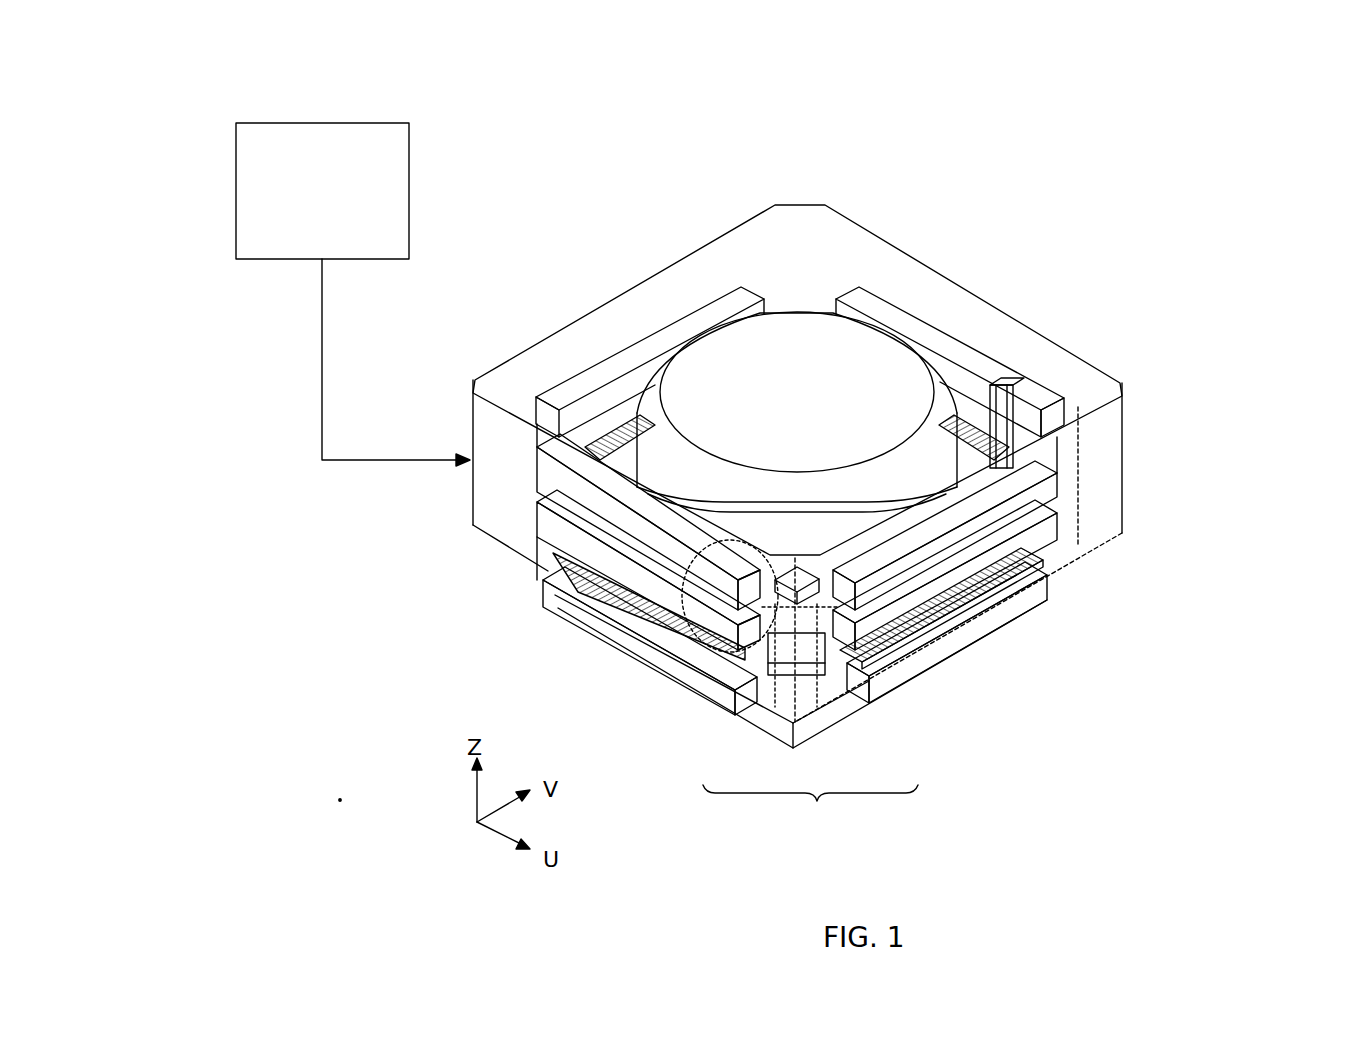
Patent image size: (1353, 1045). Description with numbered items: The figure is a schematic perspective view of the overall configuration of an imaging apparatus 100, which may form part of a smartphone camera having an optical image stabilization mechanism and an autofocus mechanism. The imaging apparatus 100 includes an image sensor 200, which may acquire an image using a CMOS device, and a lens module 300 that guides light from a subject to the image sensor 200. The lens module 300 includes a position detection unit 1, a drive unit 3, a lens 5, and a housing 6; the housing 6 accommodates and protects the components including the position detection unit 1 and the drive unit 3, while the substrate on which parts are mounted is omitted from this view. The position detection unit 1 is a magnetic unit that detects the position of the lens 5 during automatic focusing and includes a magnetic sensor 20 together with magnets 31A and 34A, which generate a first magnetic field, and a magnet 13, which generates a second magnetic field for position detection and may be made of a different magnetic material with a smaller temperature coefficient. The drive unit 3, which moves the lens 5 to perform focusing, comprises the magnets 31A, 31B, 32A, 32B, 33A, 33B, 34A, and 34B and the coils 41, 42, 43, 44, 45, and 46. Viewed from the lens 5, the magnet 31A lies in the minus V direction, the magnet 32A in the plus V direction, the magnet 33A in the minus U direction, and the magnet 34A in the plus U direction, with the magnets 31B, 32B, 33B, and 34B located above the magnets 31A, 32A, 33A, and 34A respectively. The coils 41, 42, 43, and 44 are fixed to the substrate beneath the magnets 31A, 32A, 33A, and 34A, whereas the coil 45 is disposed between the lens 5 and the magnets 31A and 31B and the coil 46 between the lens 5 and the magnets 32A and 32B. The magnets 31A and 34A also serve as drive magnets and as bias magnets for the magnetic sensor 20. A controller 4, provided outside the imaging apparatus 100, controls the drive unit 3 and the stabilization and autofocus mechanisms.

The position detection unit 1 is at (810, 812).
The drive unit 3 is at (1062, 445).
The controller 4 is at (297, 123).
The lens 5 is at (900, 380).
The housing 6 is at (884, 236).
The magnet 13 is at (836, 690).
The magnetic sensor 20 is at (790, 742).
The magnet 31A is at (714, 668).
The magnet 31B is at (537, 450).
The magnet 32A is at (1062, 412).
The magnet 32B is at (1122, 383).
The magnet 33A is at (537, 450).
The magnet 33B is at (537, 407).
The magnet 34A is at (890, 690).
The magnet 34B is at (1062, 458).
The coil 41 is at (627, 650).
The coil 42 is at (1070, 386).
The coil 43 is at (607, 446).
The coil 44 is at (966, 612).
The coil 45 is at (708, 642).
The coil 46 is at (1000, 408).
The imaging apparatus 100 is at (850, 107).
The image sensor 200 is at (1020, 610).
The lens module 300 is at (1250, 210).